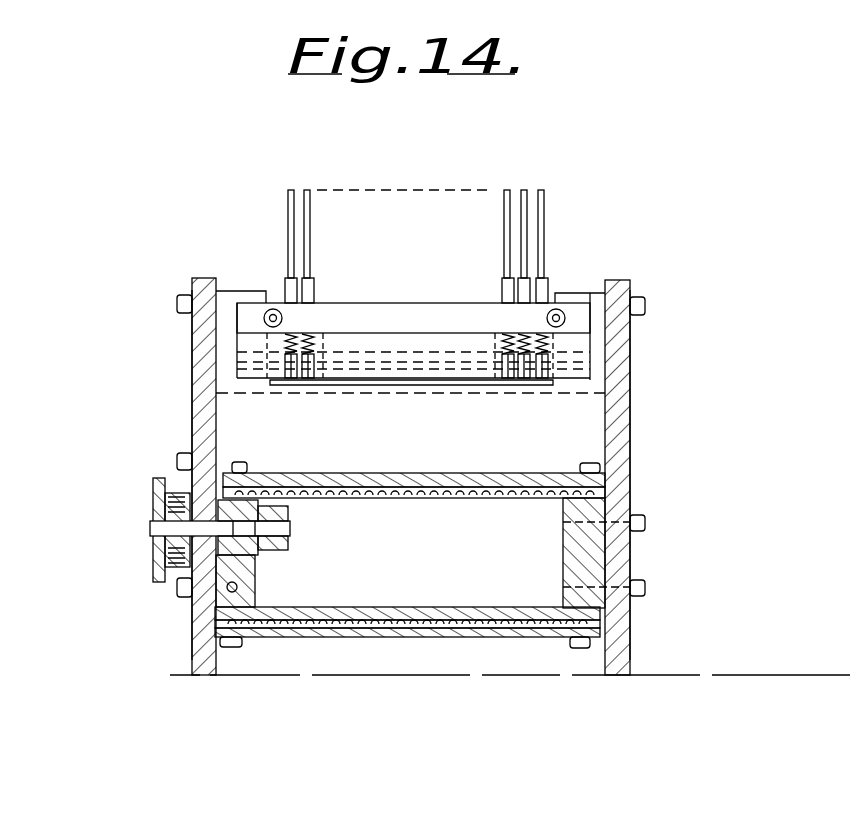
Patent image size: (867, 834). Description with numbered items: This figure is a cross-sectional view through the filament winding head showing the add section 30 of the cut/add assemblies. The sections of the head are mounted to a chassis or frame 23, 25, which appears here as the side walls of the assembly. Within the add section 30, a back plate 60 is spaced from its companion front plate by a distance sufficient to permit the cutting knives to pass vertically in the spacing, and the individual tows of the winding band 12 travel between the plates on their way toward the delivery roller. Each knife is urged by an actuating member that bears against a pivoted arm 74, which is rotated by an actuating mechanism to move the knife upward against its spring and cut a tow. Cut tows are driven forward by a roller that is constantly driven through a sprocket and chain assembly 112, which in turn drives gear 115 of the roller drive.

The add section 30 is at (618, 263).
The frame 23 is at (192, 386).
The frame 25 is at (603, 393).
The pivoted arm 74 is at (522, 385).
The back plate 60 is at (420, 458).
The winding band 12 is at (508, 500).
The sprocket and chain assembly 112 is at (152, 508).
The gear 115 is at (345, 580).